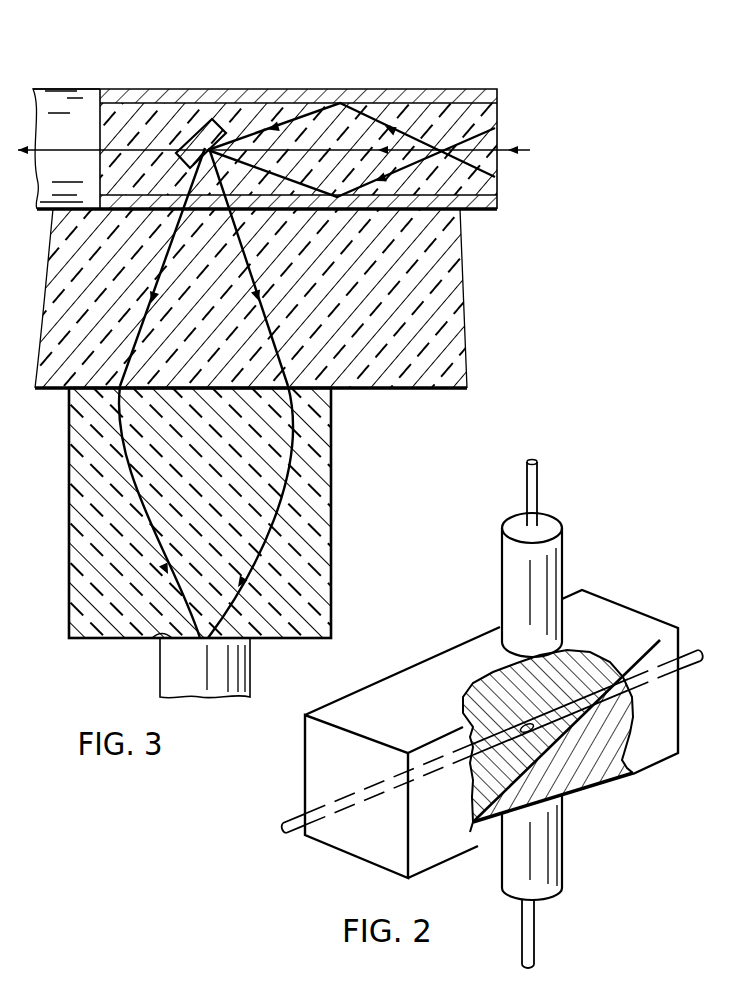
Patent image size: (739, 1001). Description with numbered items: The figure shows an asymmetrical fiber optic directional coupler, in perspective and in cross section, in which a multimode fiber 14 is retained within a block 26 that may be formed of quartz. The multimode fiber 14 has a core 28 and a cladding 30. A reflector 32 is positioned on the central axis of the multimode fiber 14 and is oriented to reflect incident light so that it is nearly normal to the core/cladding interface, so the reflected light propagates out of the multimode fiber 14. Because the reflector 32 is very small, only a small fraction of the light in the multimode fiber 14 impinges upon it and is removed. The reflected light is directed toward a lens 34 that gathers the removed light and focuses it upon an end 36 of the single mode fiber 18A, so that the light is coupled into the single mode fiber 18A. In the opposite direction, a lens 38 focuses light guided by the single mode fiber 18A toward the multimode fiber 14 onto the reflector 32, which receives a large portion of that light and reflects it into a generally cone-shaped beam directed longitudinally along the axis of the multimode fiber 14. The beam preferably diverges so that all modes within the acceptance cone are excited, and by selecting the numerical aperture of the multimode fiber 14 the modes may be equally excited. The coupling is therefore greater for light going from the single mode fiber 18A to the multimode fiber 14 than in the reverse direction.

In FIG. 3, the multimode fiber 14 is at (135, 77).
In FIG. 2, the multimode fiber 14 is at (322, 824).
In FIG. 3, the single mode fiber 18A is at (250, 662).
In FIG. 2, the single mode fiber 18A is at (535, 932).
In FIG. 3, the block 26 is at (413, 390).
In FIG. 2, the block 26 is at (470, 667).
In FIG. 3, the core 28 is at (272, 100).
In FIG. 3, the cladding 30 is at (465, 212).
In FIG. 3, the reflector 32 is at (200, 130).
In FIG. 2, the reflector 32 is at (535, 728).
In FIG. 3, the lens 34 is at (332, 460).
In FIG. 2, the lens 34 is at (562, 828).
In FIG. 3, the end 36 is at (155, 642).
In FIG. 2, the lens 38 is at (502, 557).